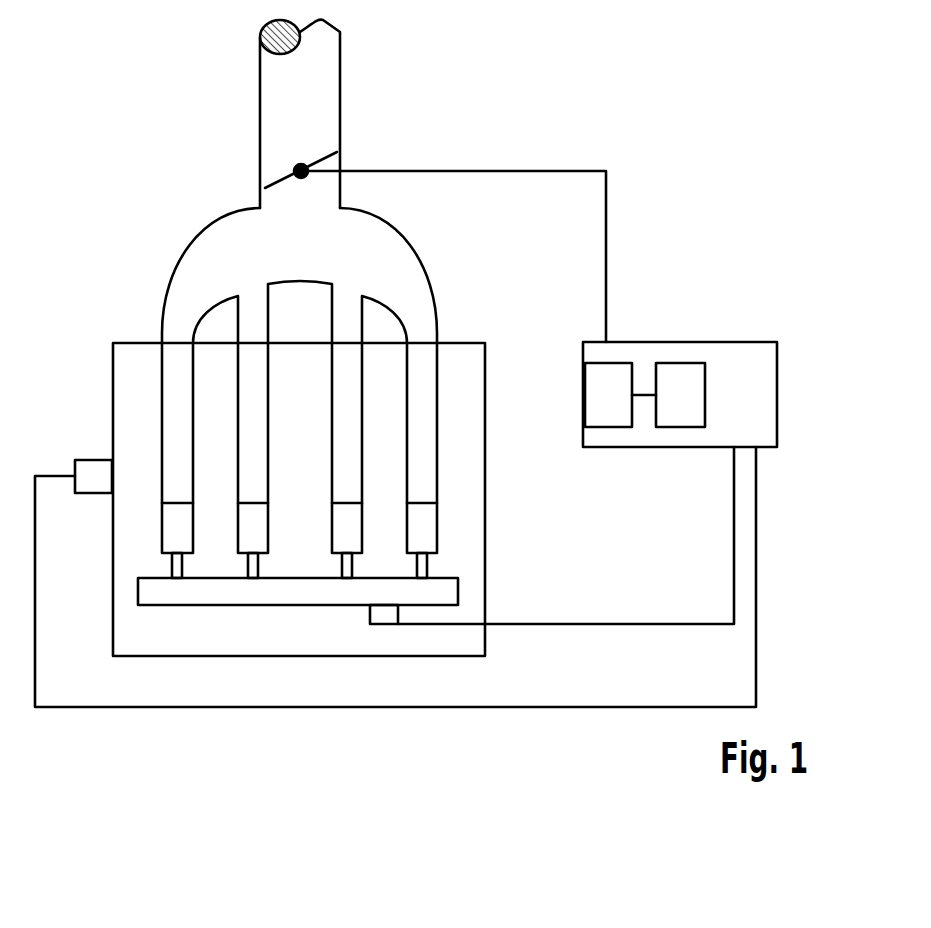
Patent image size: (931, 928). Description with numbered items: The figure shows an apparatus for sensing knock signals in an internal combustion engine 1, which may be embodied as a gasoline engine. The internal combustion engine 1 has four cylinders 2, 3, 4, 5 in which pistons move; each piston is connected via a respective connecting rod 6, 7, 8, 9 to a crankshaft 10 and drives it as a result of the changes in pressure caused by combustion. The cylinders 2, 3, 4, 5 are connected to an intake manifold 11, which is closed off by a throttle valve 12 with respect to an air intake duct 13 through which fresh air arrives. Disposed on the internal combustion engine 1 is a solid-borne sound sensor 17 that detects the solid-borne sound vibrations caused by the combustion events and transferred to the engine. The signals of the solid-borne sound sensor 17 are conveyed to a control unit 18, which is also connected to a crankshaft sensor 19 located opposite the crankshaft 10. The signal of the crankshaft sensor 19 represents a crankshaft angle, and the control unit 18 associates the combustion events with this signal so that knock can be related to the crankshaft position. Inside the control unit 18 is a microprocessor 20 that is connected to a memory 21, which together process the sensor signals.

The internal combustion engine 1 is at (120, 372).
The cylinder 2 is at (178, 526).
The cylinder 3 is at (253, 526).
The cylinder 4 is at (347, 527).
The cylinder 5 is at (422, 527).
The connecting rod 6 is at (172, 564).
The connecting rod 7 is at (248, 564).
The connecting rod 8 is at (342, 564).
The connecting rod 9 is at (417, 564).
The crankshaft 10 is at (453, 591).
The intake manifold 11 is at (203, 247).
The throttle valve 12 is at (270, 173).
The air intake duct 13 is at (283, 85).
The solid-borne sound sensor 17 is at (95, 495).
The control unit 18 is at (748, 350).
The crankshaft sensor 19 is at (370, 618).
The microprocessor 20 is at (592, 418).
The memory 21 is at (679, 418).